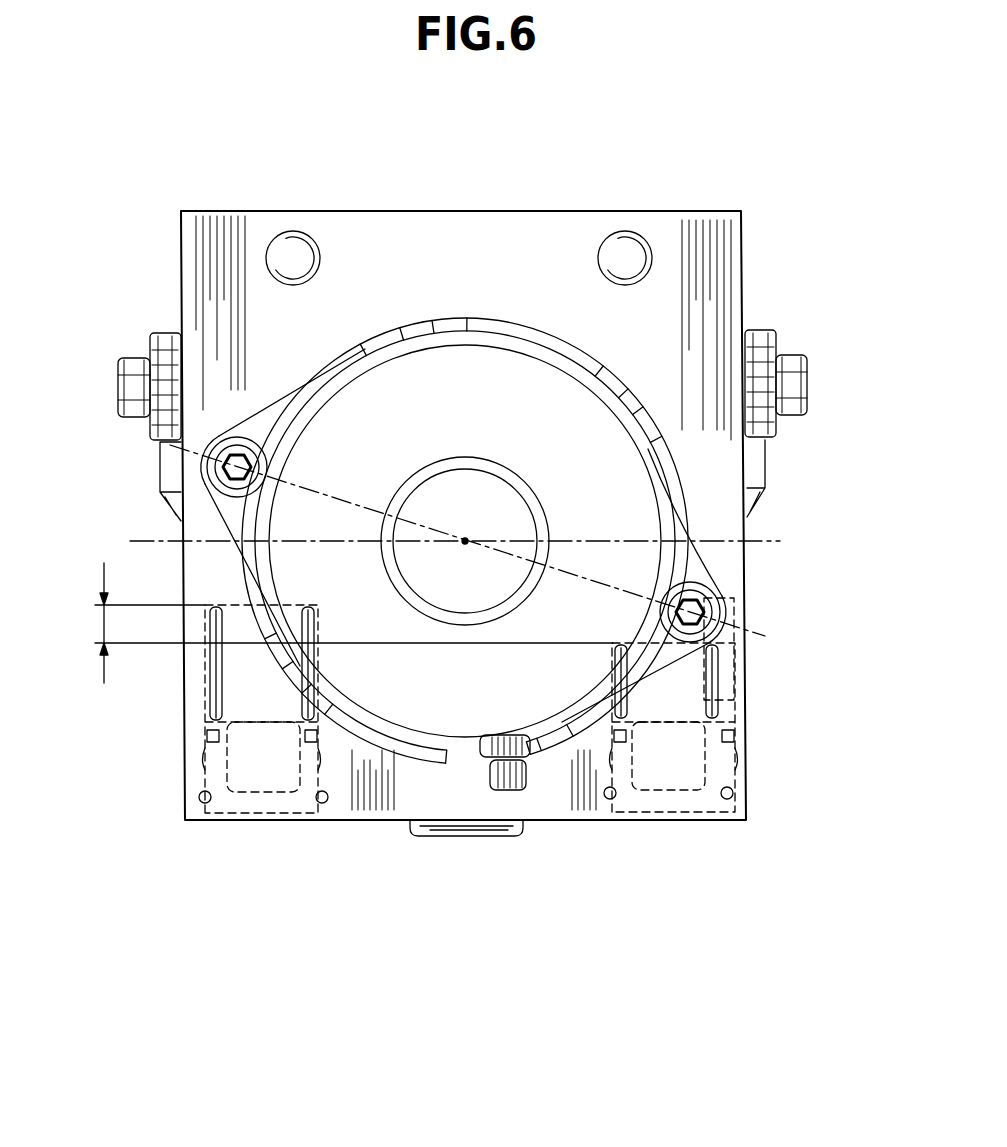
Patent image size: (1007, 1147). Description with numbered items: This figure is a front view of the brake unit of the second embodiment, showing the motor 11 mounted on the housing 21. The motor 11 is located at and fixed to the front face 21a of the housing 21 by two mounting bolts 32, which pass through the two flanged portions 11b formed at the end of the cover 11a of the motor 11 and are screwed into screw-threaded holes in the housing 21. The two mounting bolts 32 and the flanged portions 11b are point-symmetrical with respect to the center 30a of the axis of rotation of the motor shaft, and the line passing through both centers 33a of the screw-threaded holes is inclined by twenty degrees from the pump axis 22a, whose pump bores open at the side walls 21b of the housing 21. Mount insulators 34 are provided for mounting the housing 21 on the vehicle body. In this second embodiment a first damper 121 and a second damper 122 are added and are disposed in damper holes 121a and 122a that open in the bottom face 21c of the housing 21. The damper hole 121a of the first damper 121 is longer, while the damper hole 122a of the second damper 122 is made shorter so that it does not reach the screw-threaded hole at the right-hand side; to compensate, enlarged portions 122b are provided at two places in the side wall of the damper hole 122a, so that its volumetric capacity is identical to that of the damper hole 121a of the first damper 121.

The motor 11 is at (466, 304).
The cover 11a is at (507, 373).
The flanged portions 11b is at (280, 420).
The housing 21 is at (552, 206).
The front face 21a is at (683, 233).
The side walls 21b is at (180, 268).
The bottom face 21c is at (546, 822).
The pump axis 22a is at (838, 500).
The center of axis of rotation 30a is at (467, 540).
The mounting bolts 32 is at (233, 470).
The center-of-axis of the screw-threaded hole 33a is at (240, 467).
The mount insulators 34 is at (127, 392).
The first damper 121 is at (266, 796).
The damper hole 121a is at (290, 787).
The second damper 122 is at (731, 794).
The damper hole 122a is at (645, 785).
The enlarged portions 122b is at (700, 697).